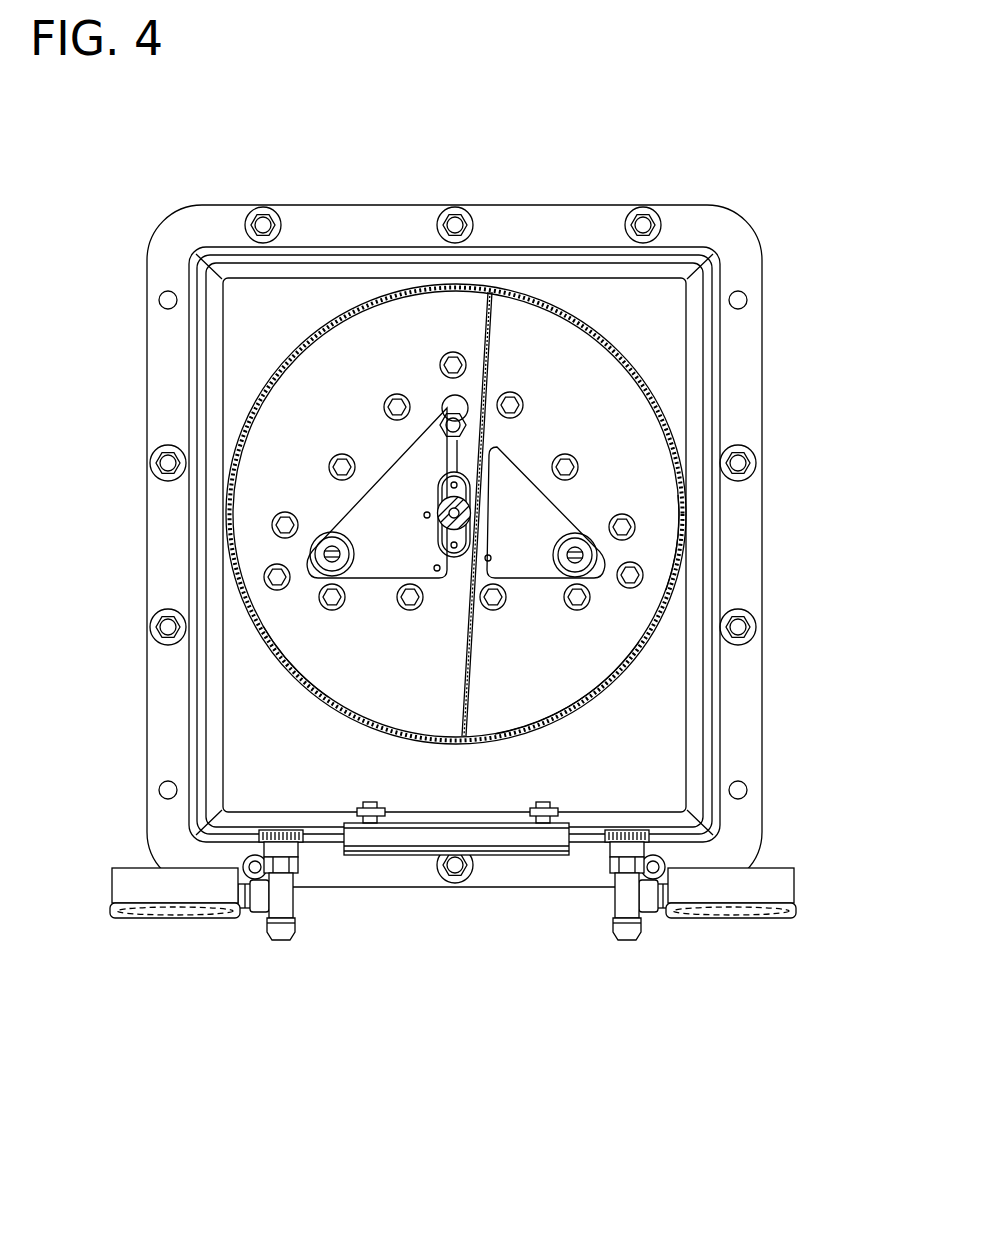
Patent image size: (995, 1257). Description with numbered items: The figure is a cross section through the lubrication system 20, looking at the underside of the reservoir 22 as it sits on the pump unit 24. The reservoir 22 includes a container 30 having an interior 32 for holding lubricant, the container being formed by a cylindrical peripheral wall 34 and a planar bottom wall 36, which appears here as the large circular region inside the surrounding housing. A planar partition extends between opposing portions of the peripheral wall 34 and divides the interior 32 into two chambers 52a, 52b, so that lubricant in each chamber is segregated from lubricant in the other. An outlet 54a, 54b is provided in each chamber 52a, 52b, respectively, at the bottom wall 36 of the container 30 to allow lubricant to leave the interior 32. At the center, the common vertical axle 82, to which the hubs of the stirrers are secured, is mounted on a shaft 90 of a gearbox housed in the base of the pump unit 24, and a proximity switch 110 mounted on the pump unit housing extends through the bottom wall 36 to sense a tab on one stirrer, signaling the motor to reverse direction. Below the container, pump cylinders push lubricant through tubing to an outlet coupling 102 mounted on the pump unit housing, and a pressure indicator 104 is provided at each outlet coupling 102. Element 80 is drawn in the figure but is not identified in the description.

The lubrication system 20 is at (458, 678).
The reservoir 22 is at (638, 363).
The pump unit 24 is at (762, 410).
The container 30 is at (290, 666).
The interior 32 is at (605, 673).
The cylindrical peripheral wall 34 is at (580, 703).
The planar bottom wall 36 is at (680, 547).
The chamber 52a is at (453, 338).
The chamber 52b is at (563, 362).
The outlet 54a is at (332, 553).
The outlet 54b is at (575, 555).
The slider link 80 is at (472, 500).
The vertical axle 82 is at (447, 508).
The shaft 90 is at (447, 527).
The outlet coupling 102 is at (300, 850).
The pressure indicator 104 is at (218, 917).
The proximity switch 110 is at (448, 413).